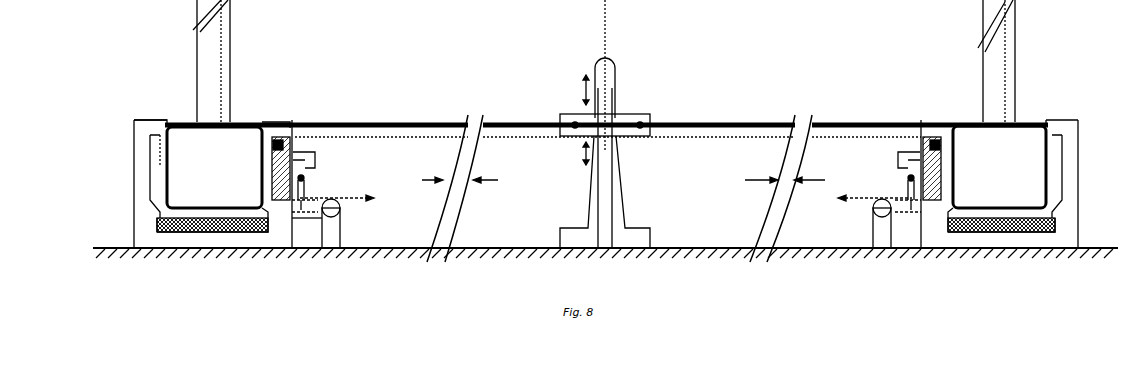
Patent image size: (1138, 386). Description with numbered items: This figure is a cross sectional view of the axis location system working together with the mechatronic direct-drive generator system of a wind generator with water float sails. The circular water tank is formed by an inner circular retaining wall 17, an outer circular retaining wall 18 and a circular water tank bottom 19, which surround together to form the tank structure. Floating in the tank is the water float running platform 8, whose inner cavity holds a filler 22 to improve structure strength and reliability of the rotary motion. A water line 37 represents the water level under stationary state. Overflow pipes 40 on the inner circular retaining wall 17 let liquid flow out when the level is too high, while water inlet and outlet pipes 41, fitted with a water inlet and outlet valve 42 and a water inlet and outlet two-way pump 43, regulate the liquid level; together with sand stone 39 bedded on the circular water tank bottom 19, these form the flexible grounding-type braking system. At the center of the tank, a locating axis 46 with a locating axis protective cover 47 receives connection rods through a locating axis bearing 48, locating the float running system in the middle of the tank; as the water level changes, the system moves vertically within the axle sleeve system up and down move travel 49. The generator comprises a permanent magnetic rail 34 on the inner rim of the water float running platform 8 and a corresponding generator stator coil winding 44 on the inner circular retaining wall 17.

The water float running platform 8 is at (236, 125).
The inner circular retaining wall 17 is at (296, 210).
The outer circular retaining wall 18 is at (147, 172).
The circular water tank bottom 19 is at (212, 240).
The filler 22 is at (200, 152).
The permanent magnetic rail 34 is at (272, 124).
The water line 37 is at (146, 124).
The sand stone 39 is at (205, 226).
The overflow pipes 40 is at (316, 162).
The water inlet and outlet pipes 41 is at (342, 204).
The water inlet and outlet valve 42 is at (320, 200).
The water inlet and outlet two-way pump 43 is at (306, 195).
The generator stator coil winding 44 is at (286, 138).
The locating axis 46 is at (430, 124).
The locating axis protective cover 47 is at (613, 78).
The locating axis bearing 48 is at (618, 118).
The axle sleeve system up and down move travel 49 is at (585, 152).